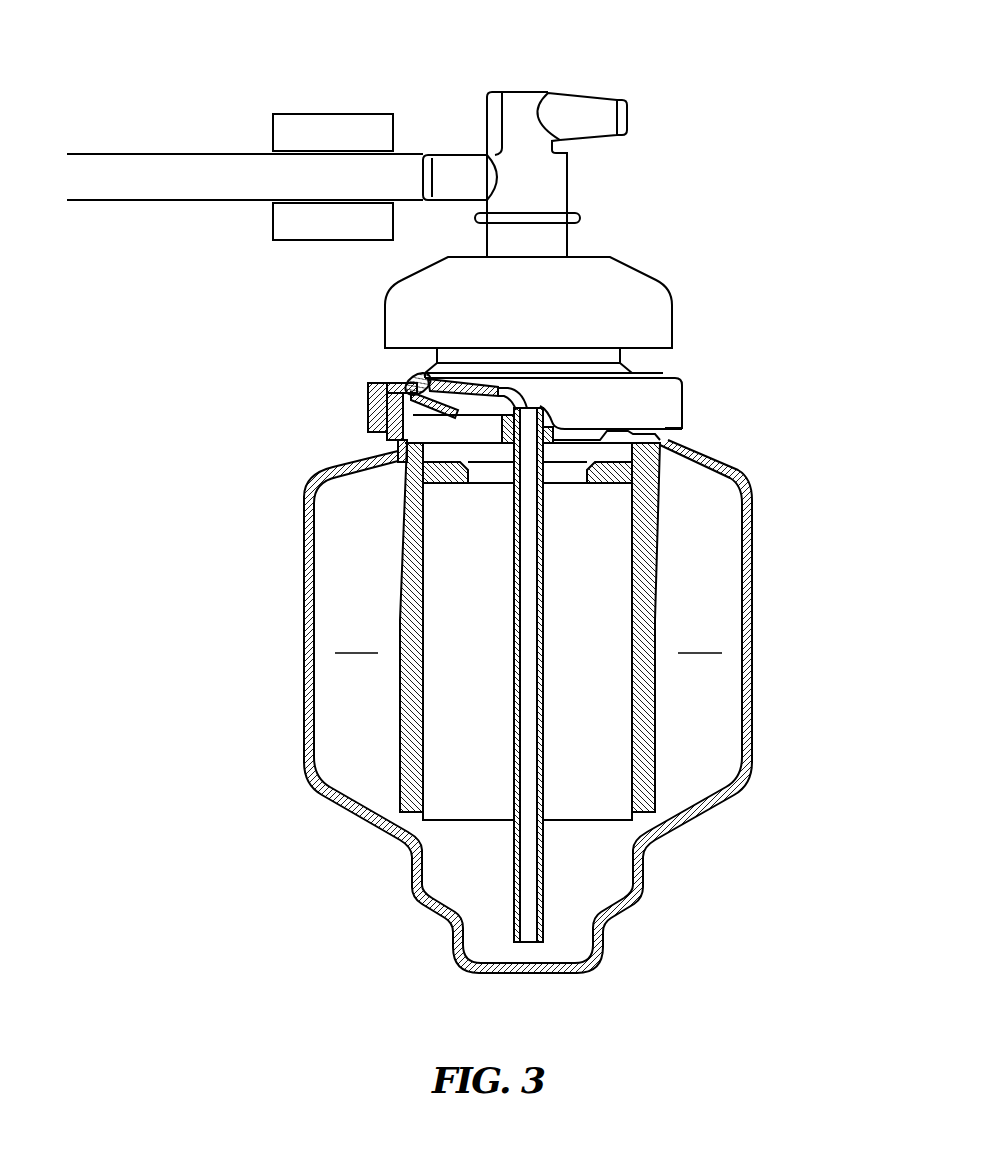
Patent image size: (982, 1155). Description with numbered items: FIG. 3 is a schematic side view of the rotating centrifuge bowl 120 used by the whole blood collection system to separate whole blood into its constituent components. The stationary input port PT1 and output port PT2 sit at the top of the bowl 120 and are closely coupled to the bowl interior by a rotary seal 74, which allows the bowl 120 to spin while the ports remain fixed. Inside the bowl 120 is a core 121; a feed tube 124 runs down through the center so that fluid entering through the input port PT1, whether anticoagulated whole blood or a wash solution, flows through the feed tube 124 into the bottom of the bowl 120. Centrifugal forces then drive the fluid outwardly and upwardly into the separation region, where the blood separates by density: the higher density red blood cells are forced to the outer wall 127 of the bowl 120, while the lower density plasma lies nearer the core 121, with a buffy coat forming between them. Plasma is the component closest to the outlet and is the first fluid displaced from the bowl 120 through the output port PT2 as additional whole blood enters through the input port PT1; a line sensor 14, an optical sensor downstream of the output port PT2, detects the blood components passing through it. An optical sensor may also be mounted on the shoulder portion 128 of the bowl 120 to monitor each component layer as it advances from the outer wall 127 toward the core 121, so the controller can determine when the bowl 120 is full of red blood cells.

The line sensor 14 is at (291, 123).
The input port PT1 is at (582, 97).
The output port PT2 is at (457, 151).
The rotary seal 74 is at (630, 358).
The shoulder portion 128 is at (353, 462).
The core 121 is at (652, 548).
The outer wall 127 is at (305, 697).
The centrifuge bowl 120 is at (520, 697).
The feed tube 124 is at (543, 760).